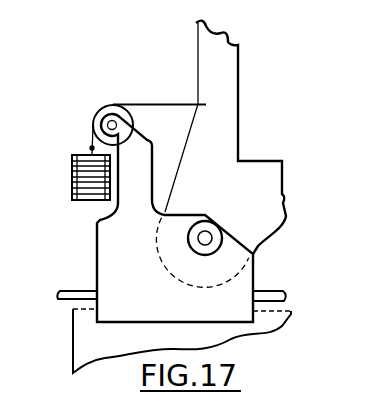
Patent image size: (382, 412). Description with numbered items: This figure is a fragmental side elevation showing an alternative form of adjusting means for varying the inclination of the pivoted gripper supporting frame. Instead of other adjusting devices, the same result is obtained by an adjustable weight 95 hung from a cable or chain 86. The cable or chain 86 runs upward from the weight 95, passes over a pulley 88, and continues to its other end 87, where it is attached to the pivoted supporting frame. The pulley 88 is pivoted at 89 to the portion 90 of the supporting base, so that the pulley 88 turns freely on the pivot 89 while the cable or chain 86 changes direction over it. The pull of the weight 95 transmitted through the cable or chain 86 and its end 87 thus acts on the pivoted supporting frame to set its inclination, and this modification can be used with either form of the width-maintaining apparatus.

The cable or chain 86 is at (163, 103).
The other end of the cable or chain 87 is at (204, 105).
The pulley 88 is at (97, 123).
The pivot 89 is at (110, 121).
The portion of the supporting base 90 is at (134, 160).
The weight 95 is at (72, 192).